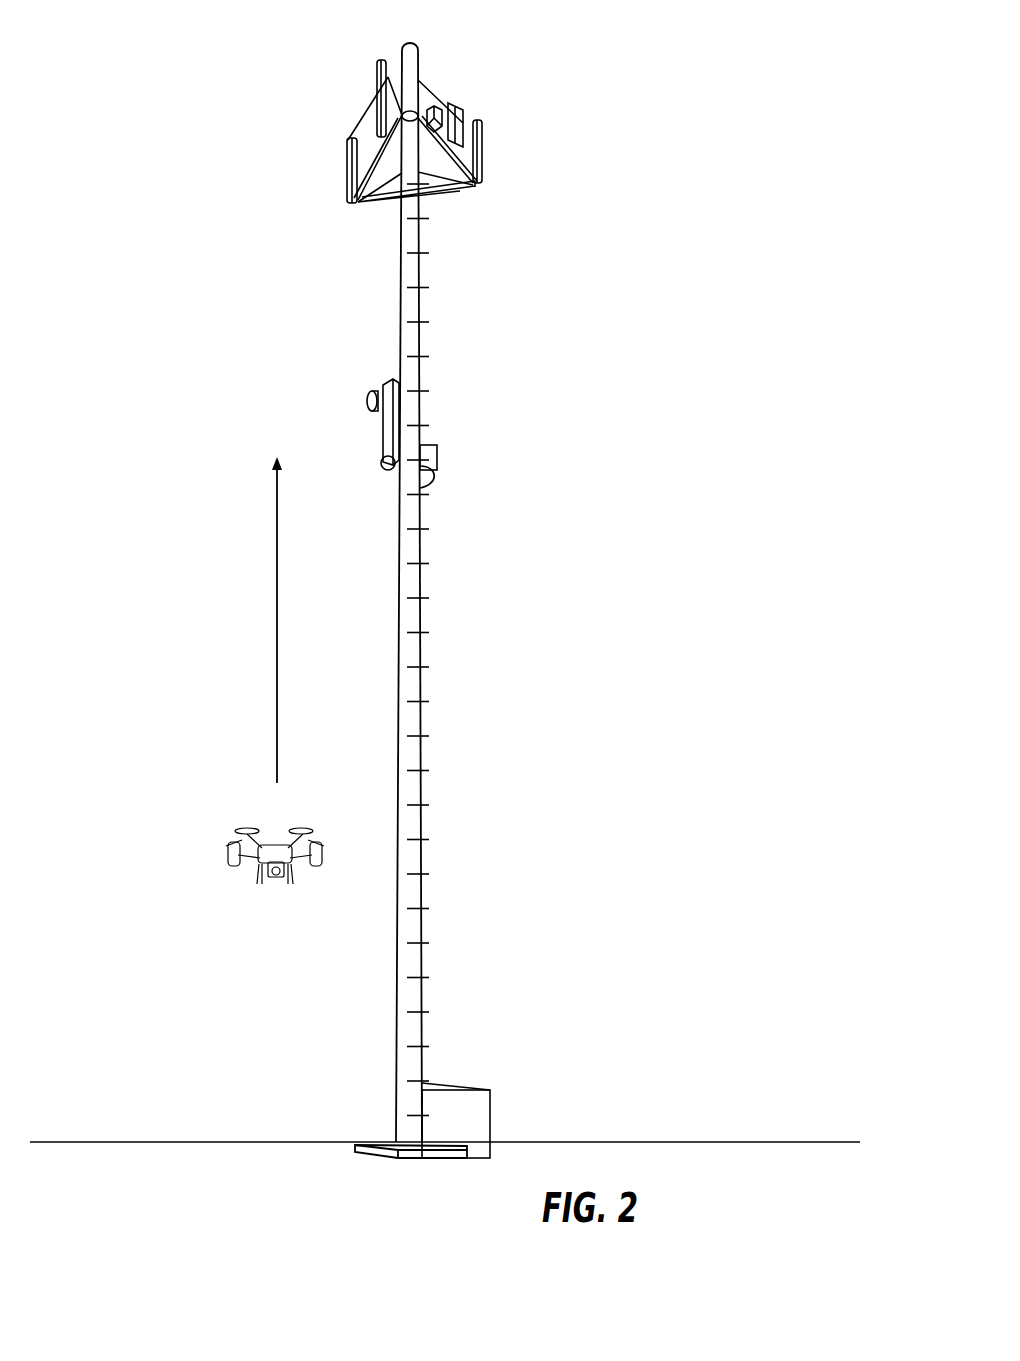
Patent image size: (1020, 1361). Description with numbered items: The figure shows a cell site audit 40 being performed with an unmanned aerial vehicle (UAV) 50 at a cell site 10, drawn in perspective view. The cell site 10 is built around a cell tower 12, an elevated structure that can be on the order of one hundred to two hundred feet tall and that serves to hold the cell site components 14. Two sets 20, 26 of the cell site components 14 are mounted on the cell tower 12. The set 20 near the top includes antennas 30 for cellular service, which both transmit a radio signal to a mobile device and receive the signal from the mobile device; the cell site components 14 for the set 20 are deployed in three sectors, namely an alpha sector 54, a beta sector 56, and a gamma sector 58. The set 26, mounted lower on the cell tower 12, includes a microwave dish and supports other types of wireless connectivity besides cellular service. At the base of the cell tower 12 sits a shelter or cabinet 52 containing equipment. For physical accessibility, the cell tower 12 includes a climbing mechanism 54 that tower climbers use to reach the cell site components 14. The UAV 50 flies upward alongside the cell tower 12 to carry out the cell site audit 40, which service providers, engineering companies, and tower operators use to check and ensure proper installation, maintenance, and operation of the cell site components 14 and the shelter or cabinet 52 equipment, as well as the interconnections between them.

The cell site 10 is at (578, 289).
The cell tower 12 is at (413, 808).
The cell site components 14 is at (516, 108).
The set of cell site components 20 is at (392, 68).
The set of cell site components 26 is at (383, 430).
The antenna 30 is at (415, 60).
The cell site audit 40 is at (212, 110).
The unmanned aerial vehicle 50 is at (221, 807).
The shelter or cabinet 52 is at (492, 1110).
The climbing mechanism 54 is at (365, 127).
The beta sector 56 is at (428, 97).
The gamma sector 58 is at (360, 197).